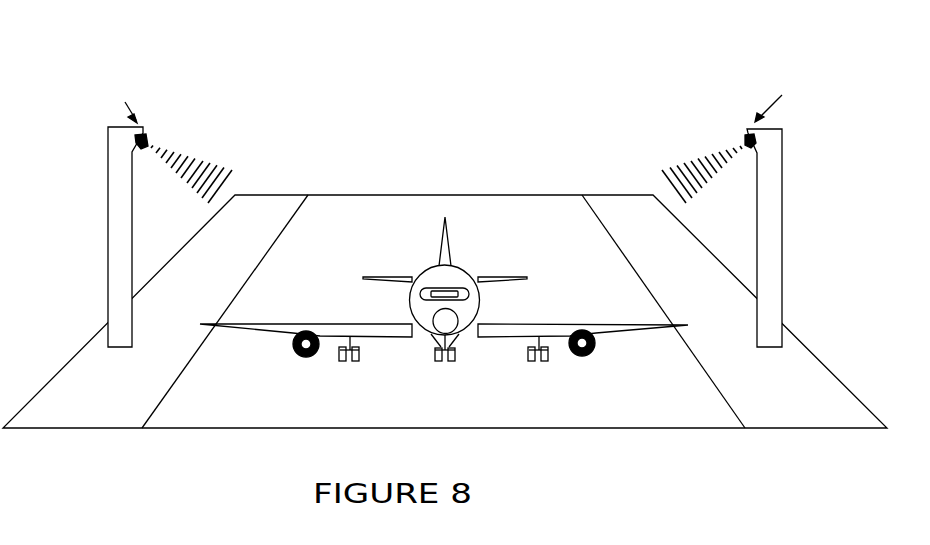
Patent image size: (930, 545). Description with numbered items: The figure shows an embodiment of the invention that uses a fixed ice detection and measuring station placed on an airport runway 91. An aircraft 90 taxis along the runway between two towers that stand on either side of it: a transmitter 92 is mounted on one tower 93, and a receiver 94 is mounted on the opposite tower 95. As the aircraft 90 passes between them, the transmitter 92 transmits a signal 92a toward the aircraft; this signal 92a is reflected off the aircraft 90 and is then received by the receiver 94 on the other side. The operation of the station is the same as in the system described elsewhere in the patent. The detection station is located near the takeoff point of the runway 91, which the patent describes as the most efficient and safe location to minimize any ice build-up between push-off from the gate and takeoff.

The aircraft 90 is at (465, 270).
The airport runway 91 is at (608, 398).
The transmitter 92 is at (132, 138).
The signal 92a is at (238, 147).
The tower 93 is at (107, 208).
The receiver 94 is at (757, 138).
The tower 95 is at (782, 209).